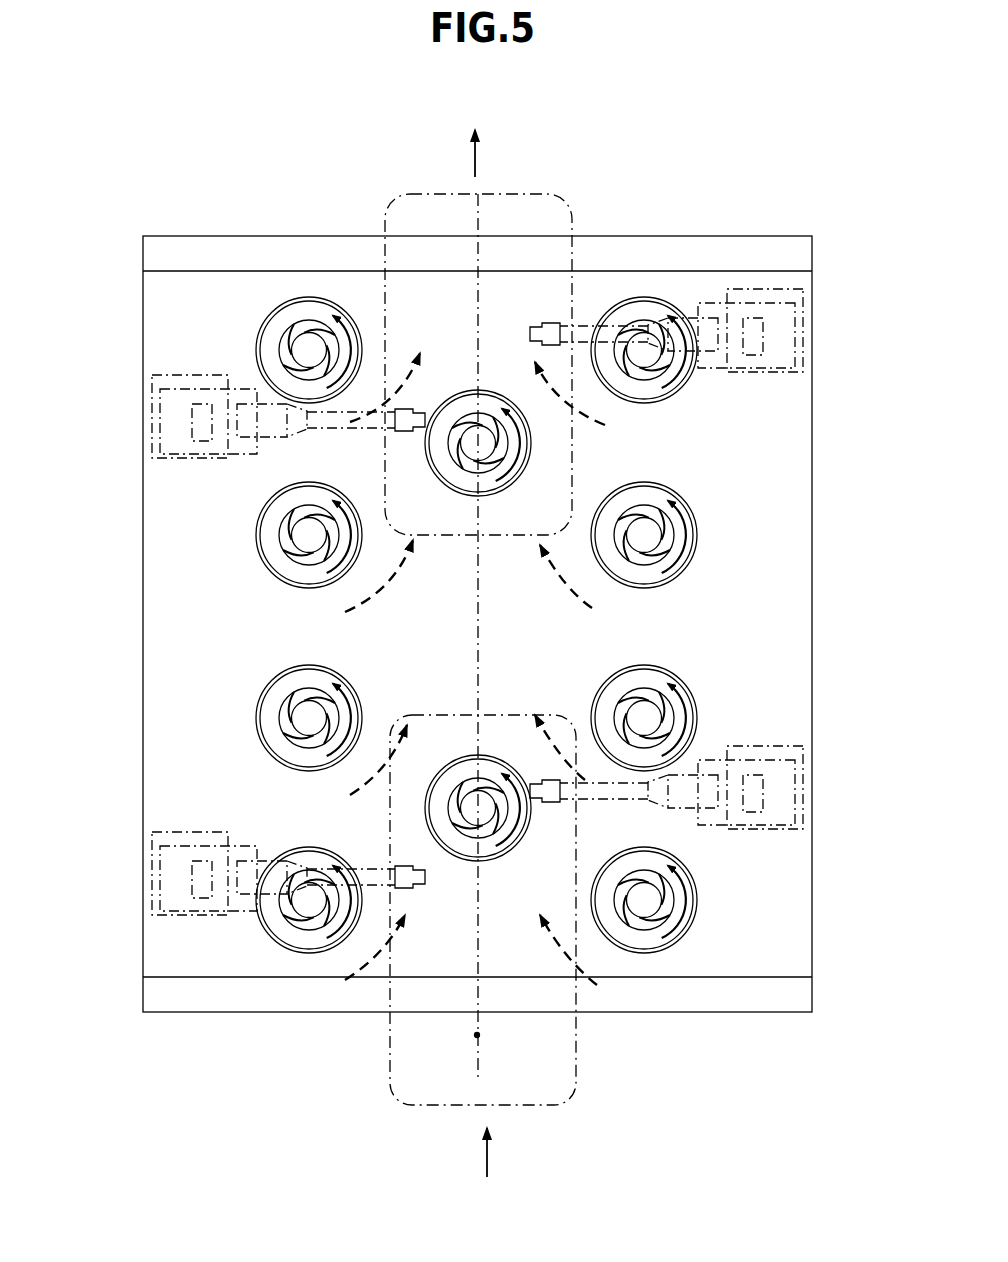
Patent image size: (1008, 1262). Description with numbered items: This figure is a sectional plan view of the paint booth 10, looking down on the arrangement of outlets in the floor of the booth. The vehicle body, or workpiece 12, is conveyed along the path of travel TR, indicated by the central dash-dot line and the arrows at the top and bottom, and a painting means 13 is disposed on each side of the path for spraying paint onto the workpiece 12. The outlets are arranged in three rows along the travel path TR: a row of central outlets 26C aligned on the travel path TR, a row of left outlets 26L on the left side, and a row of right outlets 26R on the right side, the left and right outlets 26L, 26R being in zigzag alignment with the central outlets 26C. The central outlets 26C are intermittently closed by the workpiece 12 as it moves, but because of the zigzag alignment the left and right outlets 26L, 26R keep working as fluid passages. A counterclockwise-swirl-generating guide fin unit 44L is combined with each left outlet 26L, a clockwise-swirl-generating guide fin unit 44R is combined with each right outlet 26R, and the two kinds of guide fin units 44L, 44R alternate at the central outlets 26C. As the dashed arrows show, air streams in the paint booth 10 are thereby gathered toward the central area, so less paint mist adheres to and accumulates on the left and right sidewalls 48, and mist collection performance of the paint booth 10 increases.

The paint booth 10 is at (141, 712).
The vehicle body 12 is at (565, 200).
The painting means 13 is at (174, 828).
The left outlets 26L is at (265, 690).
The right outlets 26R is at (697, 523).
The central outlets 26C is at (487, 392).
The counterclockwise-swirl-generating guide fin unit 44L is at (283, 343).
The clockwise-swirl-generating guide fin unit 44R is at (462, 413).
The left and right sidewalls 48 is at (810, 607).
The path of travel TR is at (477, 1035).